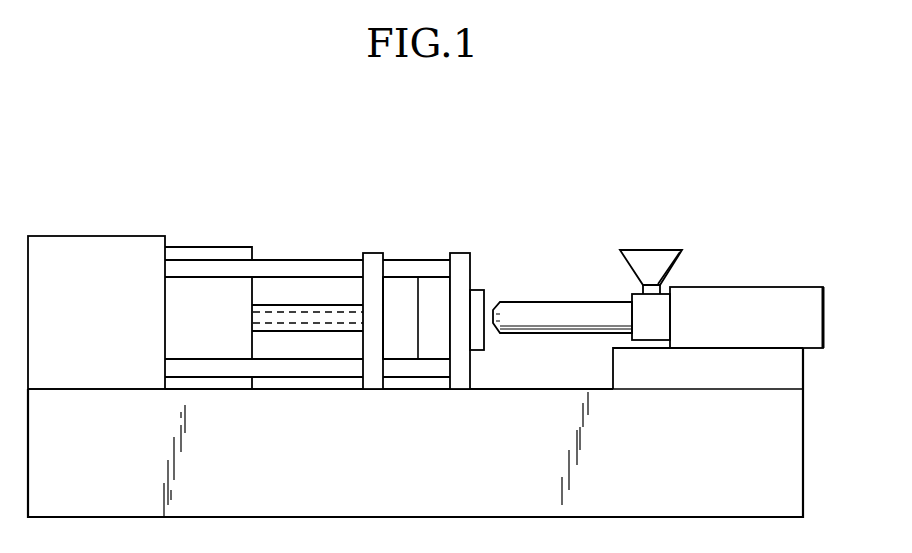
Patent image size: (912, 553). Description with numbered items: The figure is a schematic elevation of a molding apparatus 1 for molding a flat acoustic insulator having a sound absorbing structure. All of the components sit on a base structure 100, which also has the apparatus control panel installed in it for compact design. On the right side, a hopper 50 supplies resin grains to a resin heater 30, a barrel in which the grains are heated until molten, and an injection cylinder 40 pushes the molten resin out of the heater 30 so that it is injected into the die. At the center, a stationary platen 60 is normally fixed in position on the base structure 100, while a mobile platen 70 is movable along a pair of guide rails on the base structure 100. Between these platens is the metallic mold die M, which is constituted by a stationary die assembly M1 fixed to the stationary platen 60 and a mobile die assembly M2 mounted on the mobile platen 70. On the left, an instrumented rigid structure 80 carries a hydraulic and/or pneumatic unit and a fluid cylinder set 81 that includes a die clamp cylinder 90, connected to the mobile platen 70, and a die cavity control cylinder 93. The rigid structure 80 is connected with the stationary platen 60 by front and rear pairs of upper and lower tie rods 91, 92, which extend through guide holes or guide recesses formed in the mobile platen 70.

The molding apparatus 1 is at (498, 265).
The base structure 100 is at (803, 450).
The instrumented rigid structure 80 is at (107, 250).
The fluid cylinder set 81 is at (206, 257).
The die clamp cylinder 90 is at (277, 304).
The upper tie rods 91 is at (308, 258).
The lower tie rods 92 is at (312, 365).
The die cavity control cylinder 93 is at (340, 298).
The mobile platen 70 is at (372, 258).
The stationary platen 60 is at (463, 258).
The mold die M is at (438, 376).
The stationary die assembly M1 is at (437, 283).
The mobile die assembly M2 is at (398, 283).
The resin heater 30 is at (573, 301).
The hopper 50 is at (657, 248).
The injection cylinder 40 is at (753, 286).